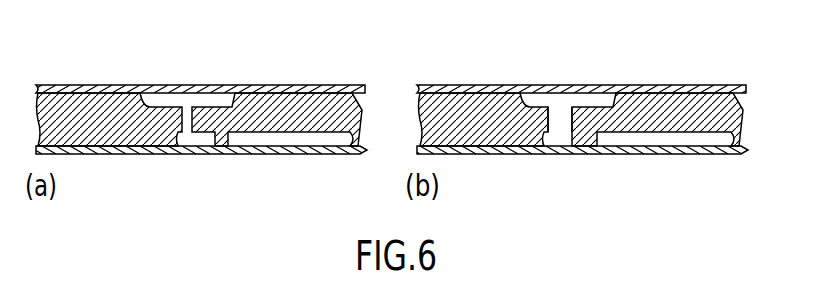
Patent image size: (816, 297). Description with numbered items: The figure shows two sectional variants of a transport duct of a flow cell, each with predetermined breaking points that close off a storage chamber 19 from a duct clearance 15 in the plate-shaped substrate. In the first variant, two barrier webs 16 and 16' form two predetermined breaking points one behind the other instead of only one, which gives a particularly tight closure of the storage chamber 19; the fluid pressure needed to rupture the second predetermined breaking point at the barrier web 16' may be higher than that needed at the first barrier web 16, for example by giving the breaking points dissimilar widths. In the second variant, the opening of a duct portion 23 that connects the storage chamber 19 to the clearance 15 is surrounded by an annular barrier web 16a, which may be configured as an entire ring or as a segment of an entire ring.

The storage chamber 19 is at (174, 100).
The barrier web 16 is at (255, 147).
The barrier web 16' is at (201, 168).
The duct portion 23 is at (550, 124).
The annular barrier web 16a is at (587, 128).
The duct clearance 15 is at (693, 145).